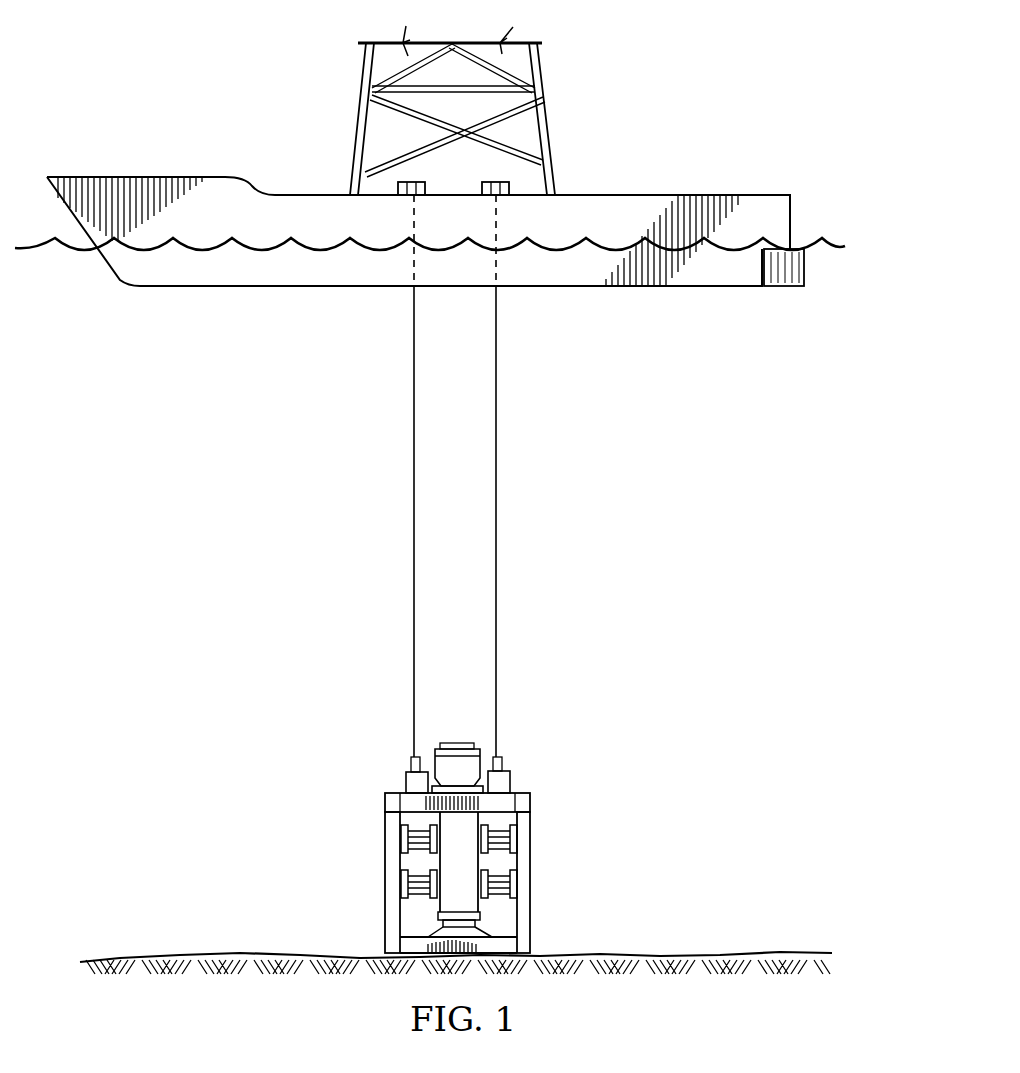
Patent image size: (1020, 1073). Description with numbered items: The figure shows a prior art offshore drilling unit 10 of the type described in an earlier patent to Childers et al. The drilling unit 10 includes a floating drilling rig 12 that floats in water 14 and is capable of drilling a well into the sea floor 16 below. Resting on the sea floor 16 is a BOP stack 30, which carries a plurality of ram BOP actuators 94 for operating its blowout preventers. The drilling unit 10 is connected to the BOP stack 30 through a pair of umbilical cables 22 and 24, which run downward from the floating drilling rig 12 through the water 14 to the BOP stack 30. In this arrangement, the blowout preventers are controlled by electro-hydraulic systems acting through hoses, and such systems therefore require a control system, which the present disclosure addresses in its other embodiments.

The offshore drilling unit 10 is at (281, 92).
The floating drilling rig 12 is at (542, 75).
The water 14 is at (578, 225).
The sea floor 16 is at (707, 955).
The umbilical cable 22 is at (414, 424).
The umbilical cable 24 is at (496, 423).
The BOP stack 30 is at (532, 868).
The ram BOP actuators 94 is at (397, 831).